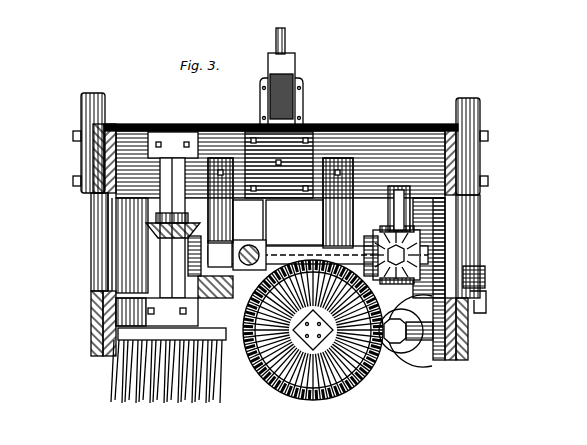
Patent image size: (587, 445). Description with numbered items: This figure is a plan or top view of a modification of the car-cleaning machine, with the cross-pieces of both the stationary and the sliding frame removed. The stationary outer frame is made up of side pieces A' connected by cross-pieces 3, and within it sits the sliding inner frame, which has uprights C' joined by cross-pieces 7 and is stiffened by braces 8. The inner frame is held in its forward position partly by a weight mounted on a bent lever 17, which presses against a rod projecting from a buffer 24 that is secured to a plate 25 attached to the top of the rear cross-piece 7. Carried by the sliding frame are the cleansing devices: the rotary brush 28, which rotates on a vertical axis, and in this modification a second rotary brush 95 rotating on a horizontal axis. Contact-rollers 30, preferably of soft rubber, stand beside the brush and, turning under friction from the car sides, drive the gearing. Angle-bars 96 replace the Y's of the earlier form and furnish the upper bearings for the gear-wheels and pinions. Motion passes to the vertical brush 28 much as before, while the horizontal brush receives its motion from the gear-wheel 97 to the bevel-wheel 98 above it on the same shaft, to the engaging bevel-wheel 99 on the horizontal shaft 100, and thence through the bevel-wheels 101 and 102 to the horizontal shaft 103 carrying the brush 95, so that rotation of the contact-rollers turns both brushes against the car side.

The cross-piece 3 is at (338, 120).
The cross-piece 7 is at (392, 140).
The brace 8 is at (98, 218).
The bent lever 17 is at (278, 30).
The buffer 24 is at (288, 60).
The plate 25 is at (294, 80).
The brush 28 is at (313, 340).
The contact-roller 30 is at (148, 286).
The second rotary brush 95 is at (168, 377).
The angle-bar 96 is at (224, 210).
The gear-wheel 97 is at (378, 224).
The bevel-wheel 98 is at (400, 222).
The bevel-wheel 99 is at (358, 234).
The horizontal shaft 100 is at (290, 244).
The bevel-wheel 101 is at (192, 226).
The bevel-wheel 102 is at (166, 231).
The horizontal shaft 103 is at (164, 250).
The side piece A' is at (279, 216).
The upright C' is at (278, 241).